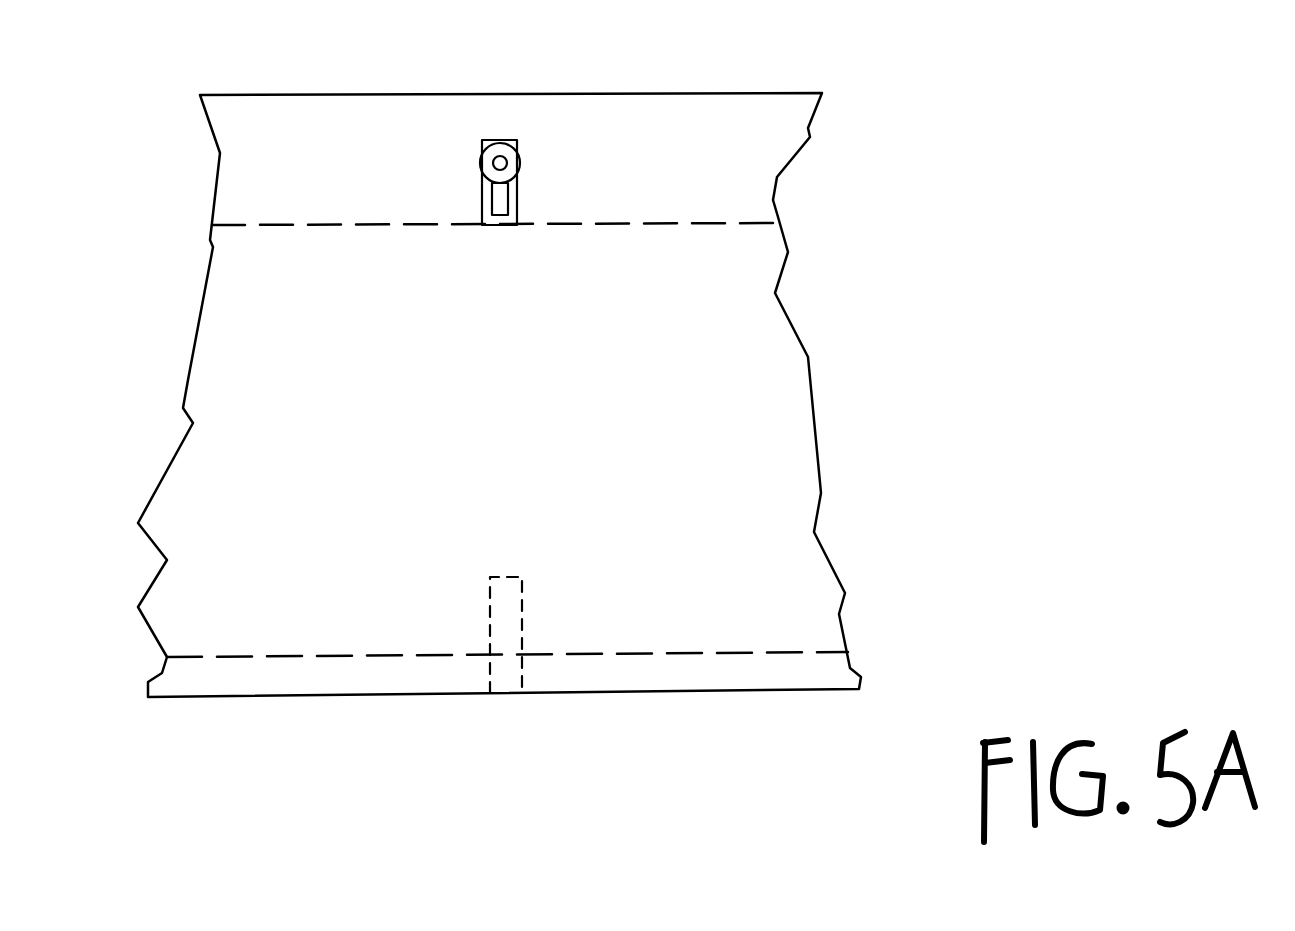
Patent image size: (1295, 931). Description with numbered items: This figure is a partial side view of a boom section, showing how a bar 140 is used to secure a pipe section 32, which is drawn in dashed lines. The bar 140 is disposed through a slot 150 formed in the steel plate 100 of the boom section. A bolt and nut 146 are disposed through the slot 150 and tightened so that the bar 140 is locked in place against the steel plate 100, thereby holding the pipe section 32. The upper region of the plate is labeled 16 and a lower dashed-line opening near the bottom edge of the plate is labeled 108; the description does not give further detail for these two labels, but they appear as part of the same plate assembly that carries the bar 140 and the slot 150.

The steel plate 100 is at (743, 120).
The upper hem band 16 is at (735, 170).
The pipe section 32 is at (711, 557).
The bar 140 is at (498, 203).
The bolt and nut 146 is at (487, 157).
The slot 150 is at (483, 193).
The bottom slot 108 is at (510, 672).